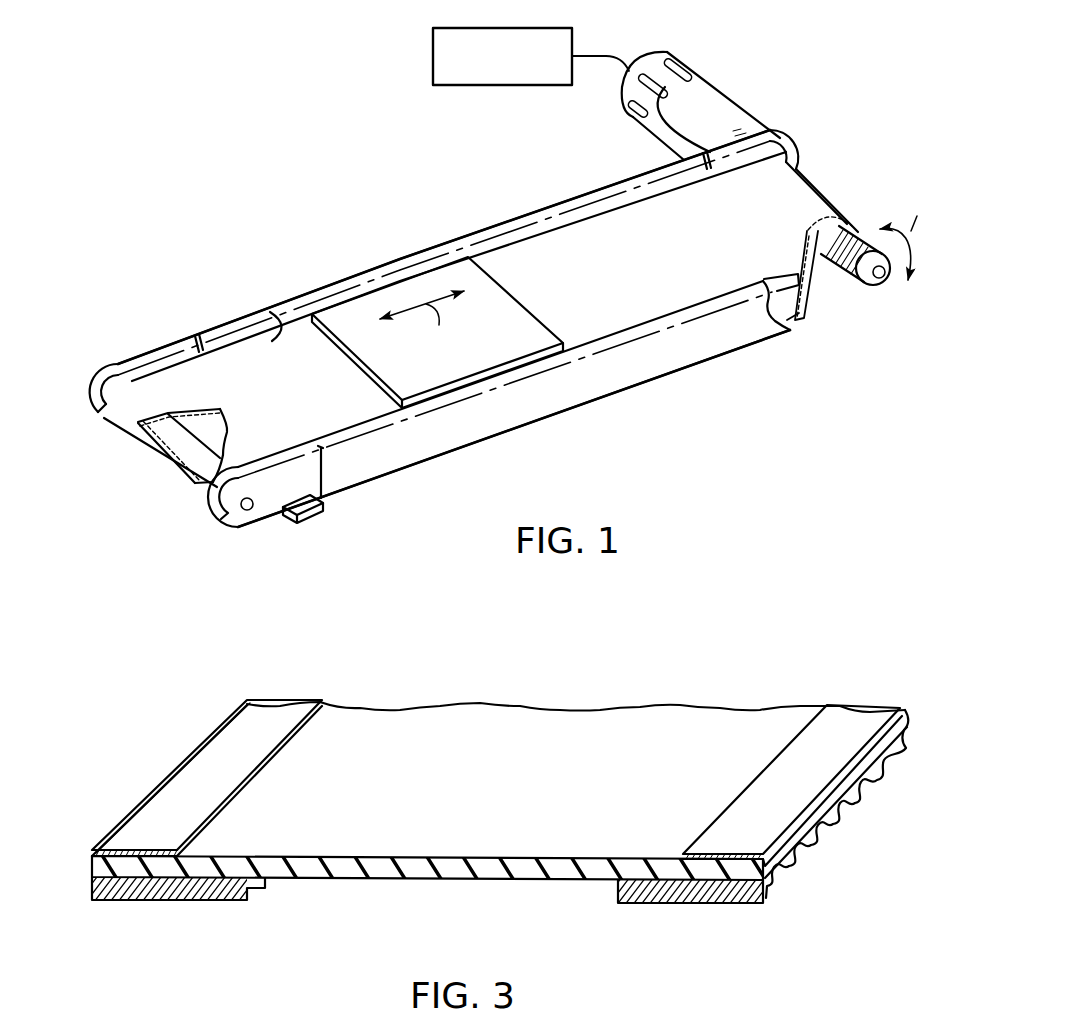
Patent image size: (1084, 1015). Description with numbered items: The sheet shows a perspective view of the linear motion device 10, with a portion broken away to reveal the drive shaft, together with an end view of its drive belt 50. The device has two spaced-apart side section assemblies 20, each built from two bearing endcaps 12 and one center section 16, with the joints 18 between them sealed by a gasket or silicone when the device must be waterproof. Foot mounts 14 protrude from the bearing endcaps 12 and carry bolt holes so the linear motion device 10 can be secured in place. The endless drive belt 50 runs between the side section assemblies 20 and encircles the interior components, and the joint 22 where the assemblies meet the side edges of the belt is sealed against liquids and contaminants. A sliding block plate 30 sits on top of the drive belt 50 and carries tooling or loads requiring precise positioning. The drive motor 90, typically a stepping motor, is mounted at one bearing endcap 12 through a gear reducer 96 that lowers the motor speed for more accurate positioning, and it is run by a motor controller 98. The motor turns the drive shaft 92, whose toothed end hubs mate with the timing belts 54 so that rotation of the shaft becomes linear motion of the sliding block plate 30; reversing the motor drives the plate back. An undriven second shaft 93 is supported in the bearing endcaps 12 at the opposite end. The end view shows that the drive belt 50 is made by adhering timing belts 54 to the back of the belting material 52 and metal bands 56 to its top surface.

In FIG. 1, the linear motion device 10 is at (255, 196).
In FIG. 1, the bearing endcap 12 is at (98, 371).
In FIG. 1, the foot mount 14 is at (316, 517).
In FIG. 1, the center section 16 is at (592, 194).
In FIG. 1, the joint 18 is at (201, 333).
In FIG. 1, the side section assembly 20 is at (461, 237).
In FIG. 1, the joint 22 is at (281, 311).
In FIG. 1, the sliding block plate 30 is at (515, 292).
In FIG. 1, the drive belt 50 is at (697, 262).
In FIG. 3, the drive belt 50 is at (386, 917).
In FIG. 3, the belting material 52 is at (476, 811).
In FIG. 3, the timing belt 54 is at (195, 900).
In FIG. 3, the metal band 56 is at (205, 778).
In FIG. 1, the drive motor 90 is at (681, 58).
In FIG. 1, the drive shaft 92 is at (860, 281).
In FIG. 1, the second shaft 93 is at (176, 455).
In FIG. 1, the gear reducer 96 is at (727, 92).
In FIG. 1, the motor controller 98 is at (433, 56).